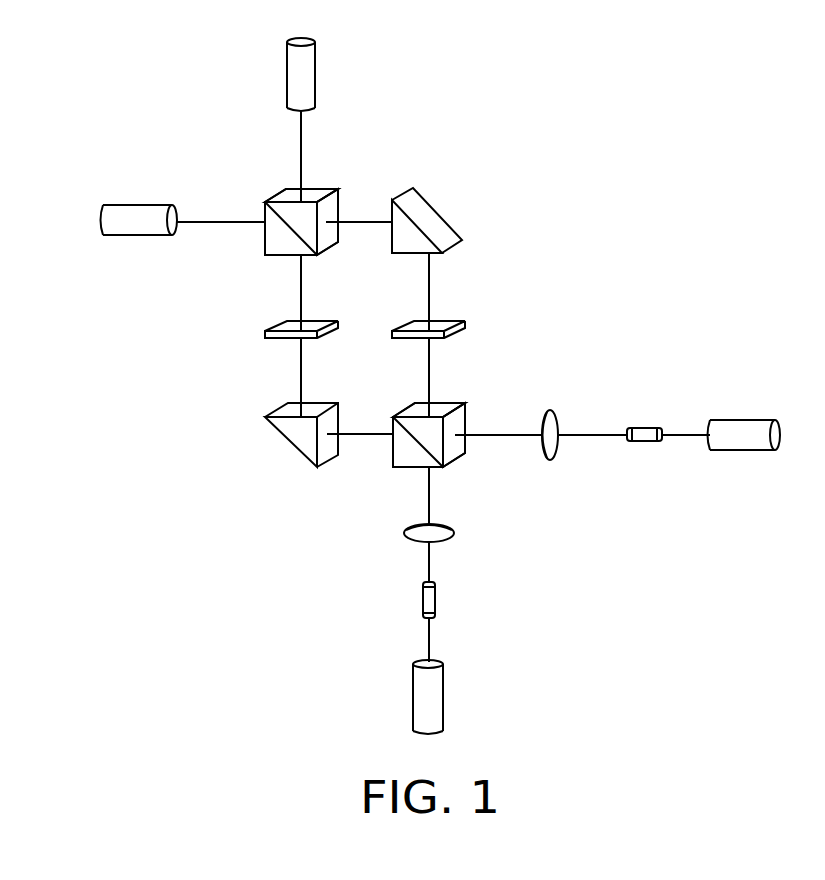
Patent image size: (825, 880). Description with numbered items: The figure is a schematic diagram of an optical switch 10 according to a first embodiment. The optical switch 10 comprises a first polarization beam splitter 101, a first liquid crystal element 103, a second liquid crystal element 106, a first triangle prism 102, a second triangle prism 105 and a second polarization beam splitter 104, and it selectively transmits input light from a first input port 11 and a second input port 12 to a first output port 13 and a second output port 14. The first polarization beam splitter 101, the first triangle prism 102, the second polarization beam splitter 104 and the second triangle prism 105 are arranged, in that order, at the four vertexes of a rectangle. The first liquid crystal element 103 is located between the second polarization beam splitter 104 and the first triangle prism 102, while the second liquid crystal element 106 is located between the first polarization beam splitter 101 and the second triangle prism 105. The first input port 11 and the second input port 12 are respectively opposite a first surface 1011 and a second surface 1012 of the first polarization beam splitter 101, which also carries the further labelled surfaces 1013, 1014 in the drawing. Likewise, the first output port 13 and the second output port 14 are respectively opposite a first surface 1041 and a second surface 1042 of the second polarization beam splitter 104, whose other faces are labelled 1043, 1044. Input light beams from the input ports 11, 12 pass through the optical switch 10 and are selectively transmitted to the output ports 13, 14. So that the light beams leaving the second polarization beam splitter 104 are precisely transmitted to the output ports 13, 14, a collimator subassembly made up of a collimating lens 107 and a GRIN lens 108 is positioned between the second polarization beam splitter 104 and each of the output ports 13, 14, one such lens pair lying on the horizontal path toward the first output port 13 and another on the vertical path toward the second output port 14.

The optical switch 10 is at (602, 262).
The first input port 11 is at (302, 85).
The second input port 12 is at (140, 213).
The first output port 13 is at (742, 437).
The second output port 14 is at (437, 682).
The first polarization beam splitter 101 is at (318, 191).
The first surface of first PBS 1011 is at (285, 190).
The second surface of first PBS 1012 is at (265, 226).
The bottom face of first beam splitter 1013 is at (289, 257).
The right face of first beam splitter 1014 is at (327, 208).
The first triangle prism 102 is at (418, 205).
The first liquid crystal element 103 is at (437, 328).
The second polarization beam splitter 104 is at (437, 410).
The first surface of second PBS 1041 is at (460, 455).
The second surface of second PBS 1042 is at (417, 468).
The top face of second beam splitter 1043 is at (448, 402).
The left face of second beam splitter 1044 is at (393, 442).
The second triangle prism 105 is at (315, 408).
The second liquid crystal element 106 is at (312, 328).
The collimating lens 107 is at (440, 530).
The GRIN lens 108 is at (642, 437).